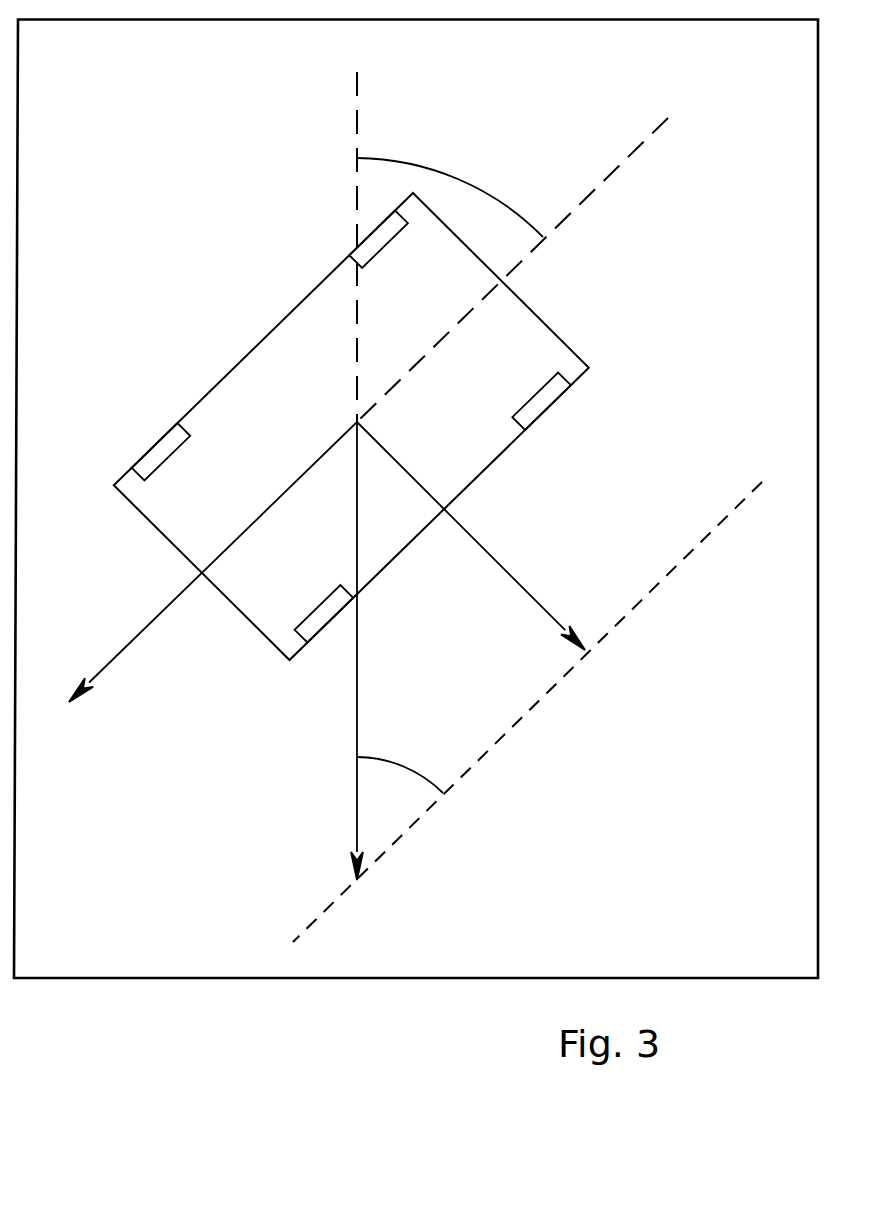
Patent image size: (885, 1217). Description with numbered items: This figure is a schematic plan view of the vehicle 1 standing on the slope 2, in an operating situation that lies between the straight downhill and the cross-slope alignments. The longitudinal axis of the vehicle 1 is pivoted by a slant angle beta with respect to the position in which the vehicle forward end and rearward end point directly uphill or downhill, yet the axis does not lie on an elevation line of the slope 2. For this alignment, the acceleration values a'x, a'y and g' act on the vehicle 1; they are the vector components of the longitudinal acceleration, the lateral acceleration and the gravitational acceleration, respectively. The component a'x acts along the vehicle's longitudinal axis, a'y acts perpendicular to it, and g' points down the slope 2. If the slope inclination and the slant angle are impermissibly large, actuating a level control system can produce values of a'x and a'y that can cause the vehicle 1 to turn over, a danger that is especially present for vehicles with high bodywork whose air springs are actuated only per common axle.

The vehicle 1 is at (276, 329).
The slope 2 is at (287, 20).
The longitudinal acceleration component a'x is at (213, 562).
The lateral acceleration component a'y is at (471, 536).
The gravitational acceleration component g' is at (340, 651).